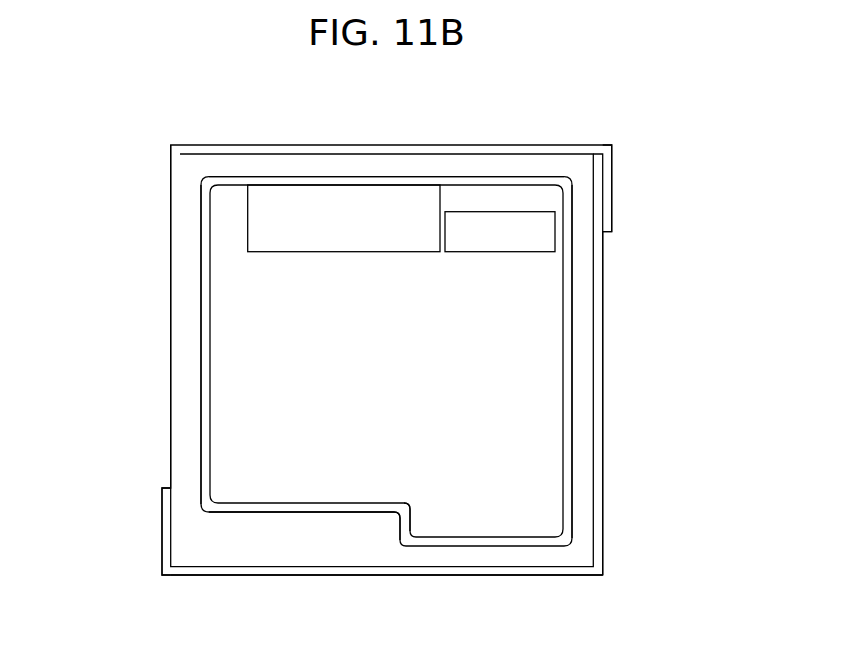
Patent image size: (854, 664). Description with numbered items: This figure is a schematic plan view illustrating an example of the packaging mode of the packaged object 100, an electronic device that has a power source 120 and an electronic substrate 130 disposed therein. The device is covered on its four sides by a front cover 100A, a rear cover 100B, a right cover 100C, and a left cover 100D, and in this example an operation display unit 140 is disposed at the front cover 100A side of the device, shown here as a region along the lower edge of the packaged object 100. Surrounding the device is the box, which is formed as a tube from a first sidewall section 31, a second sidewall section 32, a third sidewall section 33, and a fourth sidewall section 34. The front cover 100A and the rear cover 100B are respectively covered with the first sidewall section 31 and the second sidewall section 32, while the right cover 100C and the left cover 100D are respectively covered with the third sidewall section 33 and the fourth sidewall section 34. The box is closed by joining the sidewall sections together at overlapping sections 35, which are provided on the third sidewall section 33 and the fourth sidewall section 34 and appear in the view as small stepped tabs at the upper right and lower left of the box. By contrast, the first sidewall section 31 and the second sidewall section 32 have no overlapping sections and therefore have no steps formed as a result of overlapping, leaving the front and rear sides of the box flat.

The first sidewall section 31 is at (398, 575).
The second sidewall section 32 is at (400, 147).
The third sidewall section 33 is at (603, 322).
The fourth sidewall section 34 is at (170, 335).
The overlapping section 35 is at (608, 200).
The packaged object 100 is at (395, 384).
The front cover 100A is at (312, 515).
The rear cover 100B is at (312, 182).
The right cover 100C is at (573, 473).
The left cover 100D is at (203, 443).
The power source 120 is at (373, 239).
The electronic substrate 130 is at (525, 245).
The operation display unit 140 is at (468, 525).